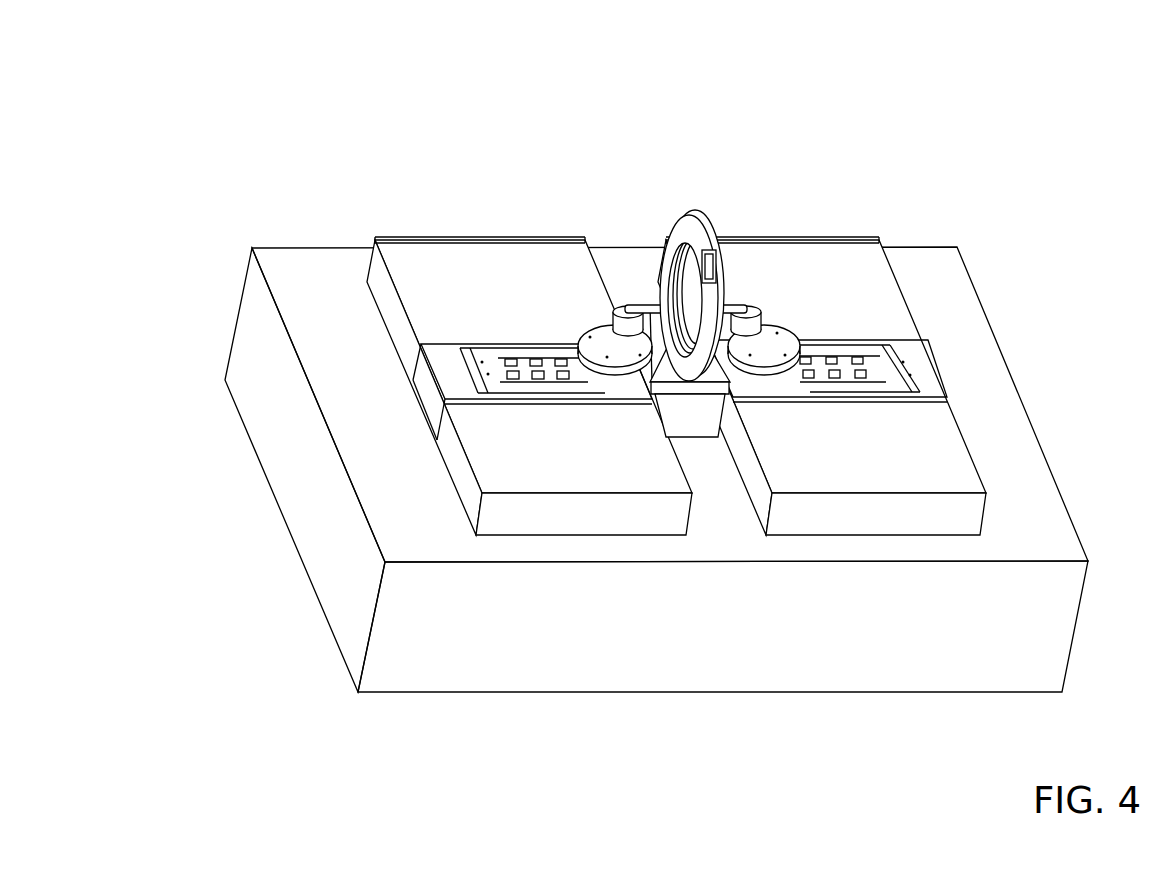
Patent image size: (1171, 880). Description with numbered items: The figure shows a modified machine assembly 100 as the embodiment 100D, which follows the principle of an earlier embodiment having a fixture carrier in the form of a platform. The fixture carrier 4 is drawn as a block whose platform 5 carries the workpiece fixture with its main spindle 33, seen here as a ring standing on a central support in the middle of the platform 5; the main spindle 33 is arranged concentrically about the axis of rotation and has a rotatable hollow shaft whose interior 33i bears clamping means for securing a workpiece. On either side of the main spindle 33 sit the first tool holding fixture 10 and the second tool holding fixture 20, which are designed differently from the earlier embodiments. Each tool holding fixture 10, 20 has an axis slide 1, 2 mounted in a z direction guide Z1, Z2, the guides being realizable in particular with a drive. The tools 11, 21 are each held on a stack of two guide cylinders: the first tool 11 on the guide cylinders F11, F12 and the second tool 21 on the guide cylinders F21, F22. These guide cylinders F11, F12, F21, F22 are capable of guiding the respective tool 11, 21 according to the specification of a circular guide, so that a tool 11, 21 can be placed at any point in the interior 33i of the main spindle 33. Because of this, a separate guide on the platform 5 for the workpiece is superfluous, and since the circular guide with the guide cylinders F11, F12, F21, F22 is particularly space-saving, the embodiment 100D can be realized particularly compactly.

The machine assembly 100 is at (664, 394).
The embodiment of the machine assembly 100D is at (664, 410).
The axis slide 1 is at (442, 420).
The axis slide 2 is at (897, 386).
The fixture carrier 4 is at (941, 677).
The platform 5 is at (694, 428).
The first tool holding fixture 10 is at (504, 247).
The first tool 11 is at (640, 301).
The second tool holding fixture 20 is at (815, 253).
The second tool 21 is at (737, 302).
The main spindle 33 is at (680, 250).
The interior 33i is at (662, 285).
The guide cylinder F11 is at (598, 330).
The guide cylinder F12 is at (613, 306).
The guide cylinder F21 is at (800, 333).
The guide cylinder F22 is at (768, 312).
The guide in the z direction Z1 is at (505, 506).
The guide in the z direction Z2 is at (955, 514).